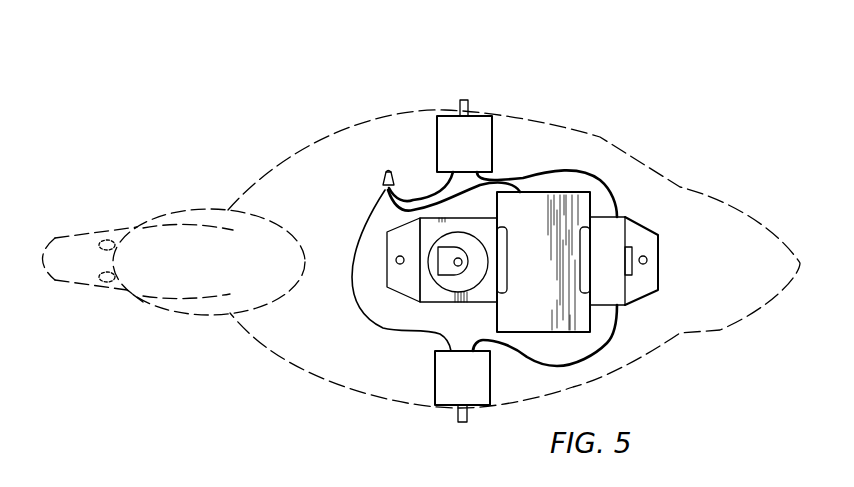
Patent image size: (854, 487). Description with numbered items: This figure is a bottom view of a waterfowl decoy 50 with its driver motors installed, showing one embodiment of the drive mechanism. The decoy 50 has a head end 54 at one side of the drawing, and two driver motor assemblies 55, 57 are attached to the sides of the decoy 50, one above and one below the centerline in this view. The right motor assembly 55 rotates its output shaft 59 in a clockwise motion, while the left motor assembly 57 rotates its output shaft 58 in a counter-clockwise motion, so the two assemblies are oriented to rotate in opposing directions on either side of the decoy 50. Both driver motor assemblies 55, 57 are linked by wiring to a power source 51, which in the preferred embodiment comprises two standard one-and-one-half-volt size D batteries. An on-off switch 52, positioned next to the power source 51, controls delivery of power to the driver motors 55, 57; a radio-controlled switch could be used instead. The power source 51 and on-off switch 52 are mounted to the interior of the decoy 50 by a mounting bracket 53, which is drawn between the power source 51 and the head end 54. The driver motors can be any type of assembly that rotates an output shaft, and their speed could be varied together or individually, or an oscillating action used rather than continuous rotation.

The waterfowl decoy 50 is at (610, 98).
The power source 51 is at (533, 192).
The on-off switch 52 is at (632, 250).
The mounting bracket 53 is at (478, 258).
The head end 54 is at (192, 208).
The right driver motor assembly 55 is at (436, 152).
The left driver motor assembly 57 is at (435, 370).
The output shaft 58 is at (462, 423).
The output shaft 59 is at (464, 100).